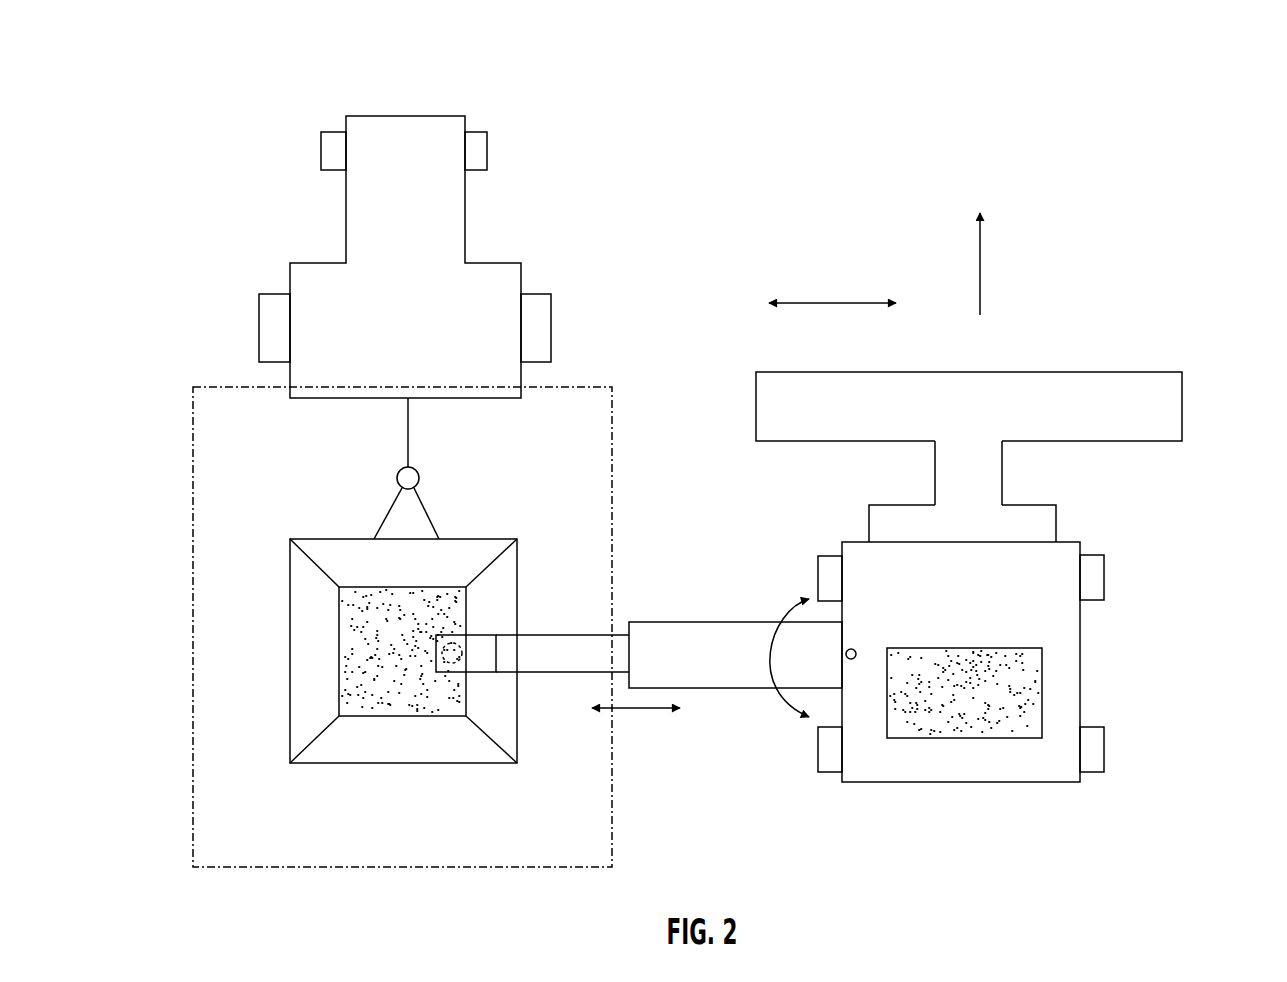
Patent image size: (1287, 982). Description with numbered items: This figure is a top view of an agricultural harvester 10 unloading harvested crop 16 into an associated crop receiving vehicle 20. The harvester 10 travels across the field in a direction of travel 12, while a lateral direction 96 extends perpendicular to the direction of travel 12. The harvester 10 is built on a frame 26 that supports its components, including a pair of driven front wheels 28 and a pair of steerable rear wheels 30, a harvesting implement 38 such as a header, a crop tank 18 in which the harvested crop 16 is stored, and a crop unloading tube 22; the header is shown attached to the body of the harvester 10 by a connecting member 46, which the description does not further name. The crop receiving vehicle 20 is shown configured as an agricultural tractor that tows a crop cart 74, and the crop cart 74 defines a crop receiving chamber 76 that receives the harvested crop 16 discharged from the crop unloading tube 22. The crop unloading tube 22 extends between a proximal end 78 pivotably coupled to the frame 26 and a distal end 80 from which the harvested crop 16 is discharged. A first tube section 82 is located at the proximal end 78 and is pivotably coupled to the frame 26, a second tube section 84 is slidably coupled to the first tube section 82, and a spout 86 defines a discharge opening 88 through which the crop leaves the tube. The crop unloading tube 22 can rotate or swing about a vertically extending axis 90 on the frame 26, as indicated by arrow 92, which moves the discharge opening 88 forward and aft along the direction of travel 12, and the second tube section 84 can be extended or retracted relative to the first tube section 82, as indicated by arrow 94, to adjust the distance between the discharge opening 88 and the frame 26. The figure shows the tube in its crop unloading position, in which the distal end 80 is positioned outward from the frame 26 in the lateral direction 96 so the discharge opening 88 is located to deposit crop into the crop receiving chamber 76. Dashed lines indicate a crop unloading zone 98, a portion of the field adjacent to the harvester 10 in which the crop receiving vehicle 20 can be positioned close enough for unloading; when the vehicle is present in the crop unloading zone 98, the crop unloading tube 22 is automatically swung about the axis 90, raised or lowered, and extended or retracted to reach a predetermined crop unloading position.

The agricultural harvester 10 is at (1185, 561).
The direction of travel 12 is at (982, 258).
The harvested crop 16 is at (414, 694).
The crop tank 18 is at (940, 738).
The crop receiving vehicle 20 is at (388, 116).
The crop unloading tube 22 is at (665, 616).
The frame 26 is at (1030, 782).
The front wheels 28 is at (817, 566).
The rear wheels 30 is at (820, 750).
The harvesting implement 38 is at (1125, 371).
The stem 46 is at (1003, 465).
The crop cart 74 is at (289, 580).
The crop receiving chamber 76 is at (350, 662).
The proximal end 78 is at (832, 701).
The distal end 80 is at (442, 674).
The first tube section 82 is at (720, 622).
The second tube section 84 is at (580, 635).
The spout 86 is at (482, 634).
The discharge opening 88 is at (468, 675).
The vertically extending axis 90 is at (858, 654).
The arrow indicating rotation 92 is at (778, 705).
The arrow indicating extension and retraction 94 is at (633, 710).
The lateral direction 96 is at (818, 300).
The crop unloading zone 98 is at (193, 460).